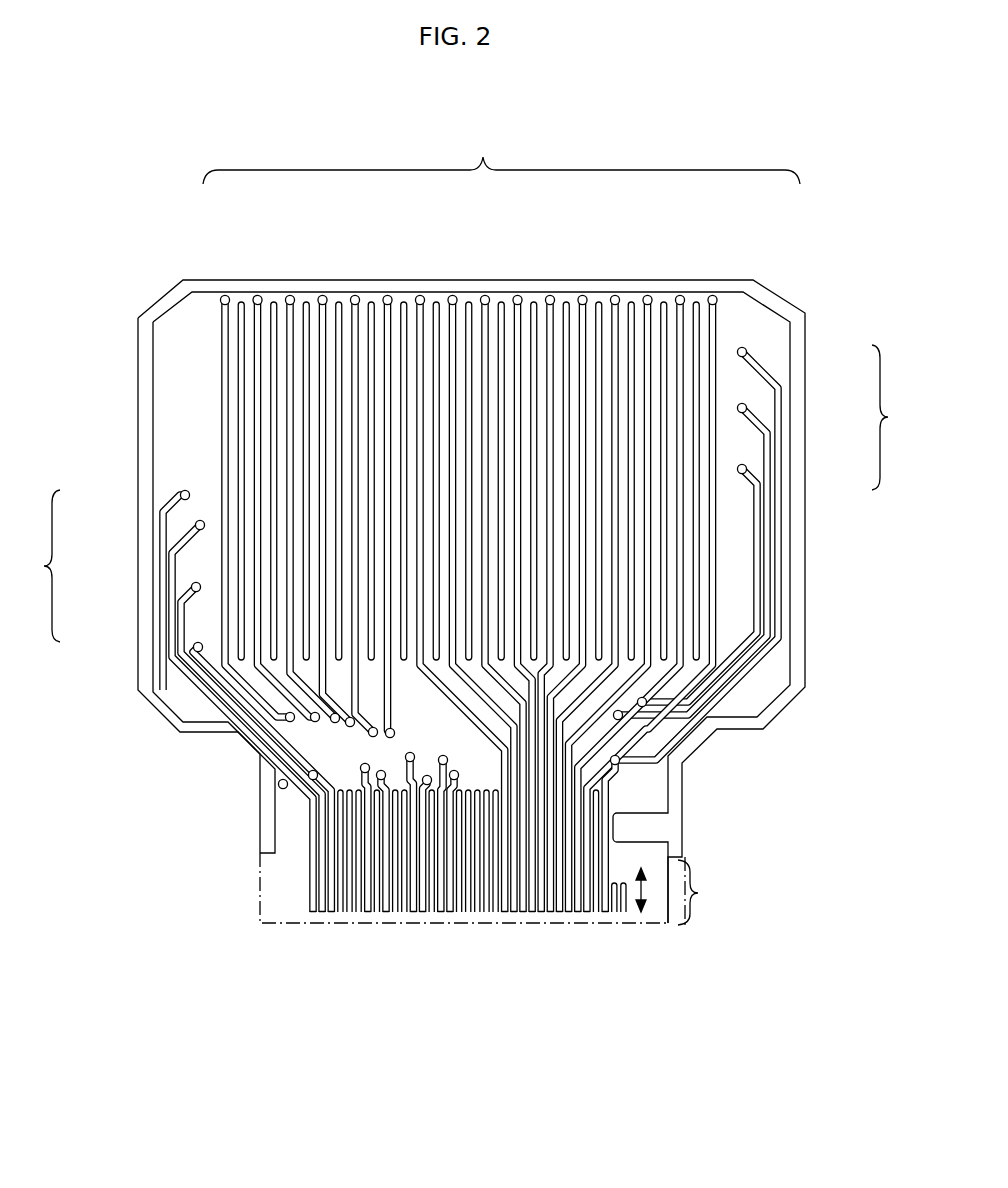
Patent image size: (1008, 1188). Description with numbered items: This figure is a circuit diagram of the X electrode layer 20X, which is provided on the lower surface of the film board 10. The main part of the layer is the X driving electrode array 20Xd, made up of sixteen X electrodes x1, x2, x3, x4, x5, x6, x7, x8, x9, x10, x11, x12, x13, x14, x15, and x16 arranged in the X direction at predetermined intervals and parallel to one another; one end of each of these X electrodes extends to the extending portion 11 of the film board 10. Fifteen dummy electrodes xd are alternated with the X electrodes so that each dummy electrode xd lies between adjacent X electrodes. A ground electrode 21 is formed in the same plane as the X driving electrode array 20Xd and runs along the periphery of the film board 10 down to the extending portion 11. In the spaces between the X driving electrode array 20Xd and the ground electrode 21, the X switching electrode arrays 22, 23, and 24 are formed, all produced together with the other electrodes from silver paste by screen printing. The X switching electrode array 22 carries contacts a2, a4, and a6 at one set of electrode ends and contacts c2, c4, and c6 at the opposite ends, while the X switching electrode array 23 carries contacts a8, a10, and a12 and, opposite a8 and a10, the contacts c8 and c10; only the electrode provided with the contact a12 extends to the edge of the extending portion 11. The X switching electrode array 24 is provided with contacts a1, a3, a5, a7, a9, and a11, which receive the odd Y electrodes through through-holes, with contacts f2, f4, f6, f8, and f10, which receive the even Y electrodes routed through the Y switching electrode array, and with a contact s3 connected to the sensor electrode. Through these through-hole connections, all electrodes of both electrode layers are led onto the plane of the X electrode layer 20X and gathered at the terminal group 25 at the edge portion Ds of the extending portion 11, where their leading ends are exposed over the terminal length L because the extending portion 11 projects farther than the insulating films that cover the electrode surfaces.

The X driving electrode array 20Xd is at (501, 152).
The X electrode x1 is at (226, 296).
The X electrode x2 is at (258, 296).
The X electrode x3 is at (290, 296).
The X electrode x4 is at (322, 296).
The X electrode x5 is at (355, 296).
The X electrode x6 is at (388, 296).
The X electrode x7 is at (420, 296).
The X electrode x8 is at (452, 296).
The X electrode x9 is at (485, 296).
The X electrode x10 is at (518, 296).
The X electrode x11 is at (550, 296).
The X electrode x12 is at (582, 296).
The X electrode x13 is at (615, 296).
The X electrode x14 is at (648, 296).
The X electrode x15 is at (680, 296).
The X electrode x16 is at (712, 296).
The dummy electrode xd is at (303, 428).
The ground electrode 21 is at (140, 437).
The X switching electrode array 22 is at (894, 417).
The X switching electrode array 23 is at (33, 566).
The contact a2 is at (748, 352).
The contact a4 is at (748, 408).
The contact a6 is at (748, 469).
The contact a8 is at (178, 497).
The contact a10 is at (172, 548).
The contact a12 is at (180, 605).
The contact a5 is at (240, 700).
The contact f10 is at (284, 717).
The contact c10 is at (310, 722).
The contact a11 is at (331, 723).
The contact a9 is at (347, 727).
The contact s3 is at (279, 787).
The contact c8 is at (309, 780).
The contact f6 is at (361, 773).
The contact f8 is at (378, 781).
The contact a7 is at (373, 738).
The contact f4 is at (390, 739).
The contact a3 is at (412, 763).
The contact a1 is at (446, 766).
The contact f2 is at (458, 781).
The contact c6 is at (648, 705).
The contact c4 is at (624, 718).
The contact c2 is at (621, 762).
The X electrode layer 20X is at (647, 800).
The X switching electrode array 24 is at (328, 930).
The connector terminal group 25 is at (600, 990).
The extending portion 11 is at (318, 932).
The film board 10 is at (678, 926).
The terminal length L is at (650, 890).
The edge portion Ds is at (708, 891).